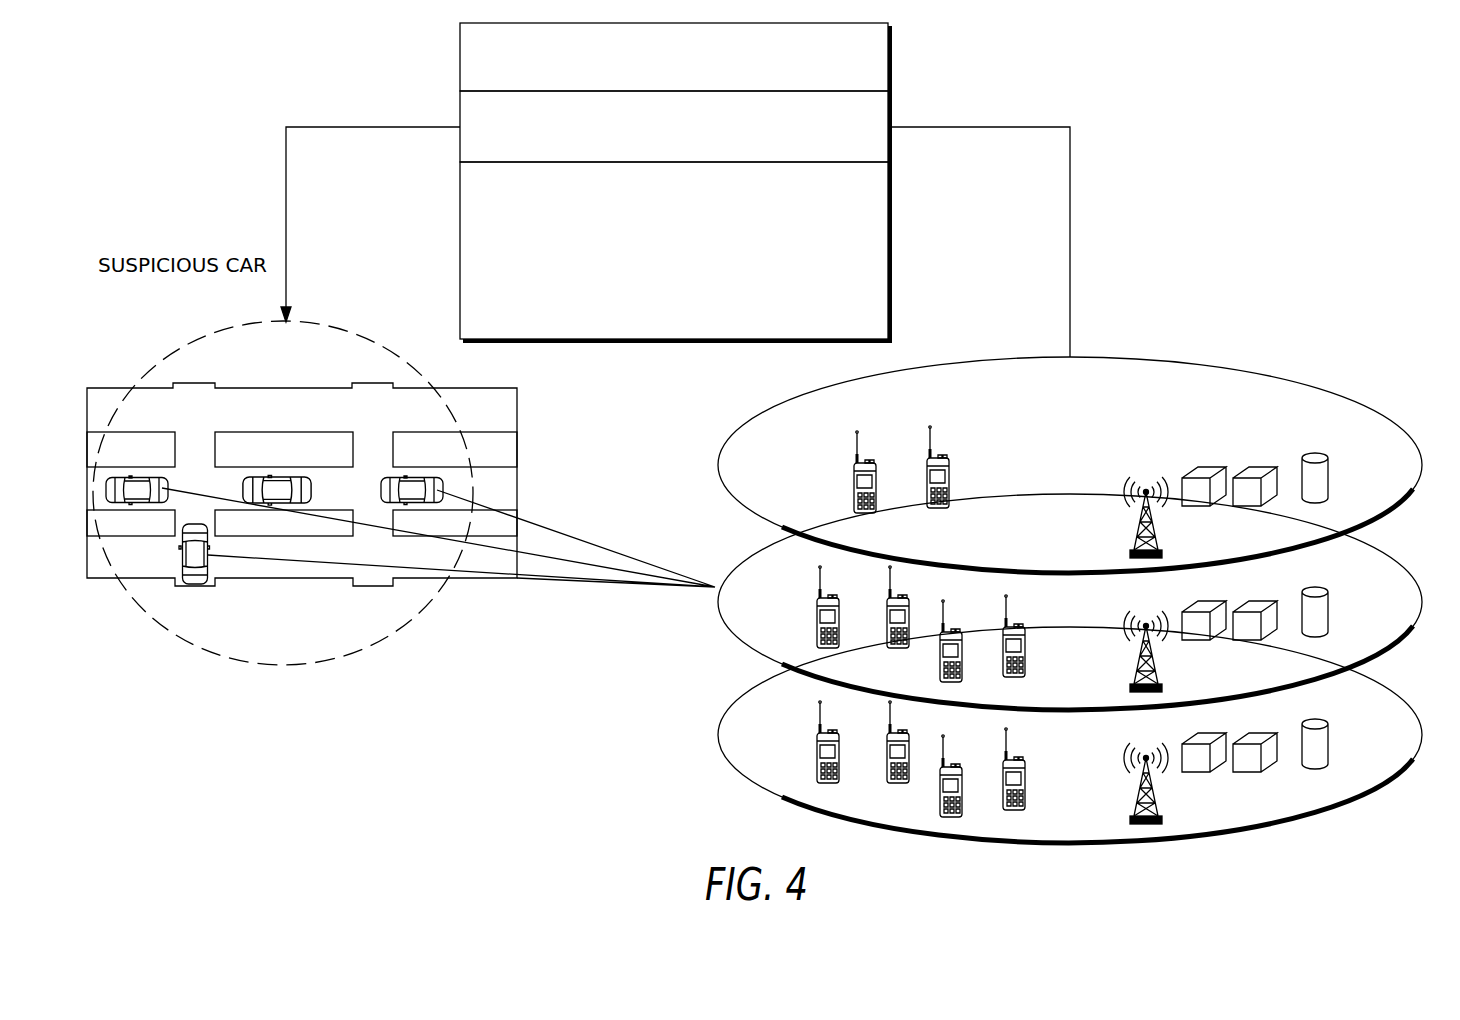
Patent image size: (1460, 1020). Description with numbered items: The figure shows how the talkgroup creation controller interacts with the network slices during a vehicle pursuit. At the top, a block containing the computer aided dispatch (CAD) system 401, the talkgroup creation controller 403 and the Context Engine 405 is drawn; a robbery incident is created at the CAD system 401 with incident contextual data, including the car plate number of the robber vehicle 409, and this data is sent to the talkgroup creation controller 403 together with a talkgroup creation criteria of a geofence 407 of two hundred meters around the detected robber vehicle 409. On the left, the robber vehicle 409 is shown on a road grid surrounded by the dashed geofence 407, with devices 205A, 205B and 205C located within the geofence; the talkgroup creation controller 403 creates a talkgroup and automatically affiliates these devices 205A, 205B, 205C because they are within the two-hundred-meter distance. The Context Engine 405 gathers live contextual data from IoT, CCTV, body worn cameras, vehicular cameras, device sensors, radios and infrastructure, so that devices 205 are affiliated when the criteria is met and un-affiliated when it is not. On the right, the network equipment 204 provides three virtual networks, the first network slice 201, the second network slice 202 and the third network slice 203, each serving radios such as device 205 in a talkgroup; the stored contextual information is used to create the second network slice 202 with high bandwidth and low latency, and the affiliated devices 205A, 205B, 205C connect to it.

The first network slice 201 is at (1350, 402).
The second network slice 202 is at (1388, 554).
The third network slice 203 is at (1388, 688).
The network equipment 204 is at (1332, 440).
The device 205 is at (857, 452).
The device 205A is at (132, 500).
The device 205B is at (195, 578).
The device 205C is at (437, 480).
The computer aided dispatch (CAD) system 401 is at (892, 55).
The talkgroup creation controller 403 is at (892, 105).
The Context Engine 405 is at (892, 255).
The geofence 407 is at (338, 326).
The robber vehicle 409 is at (273, 480).